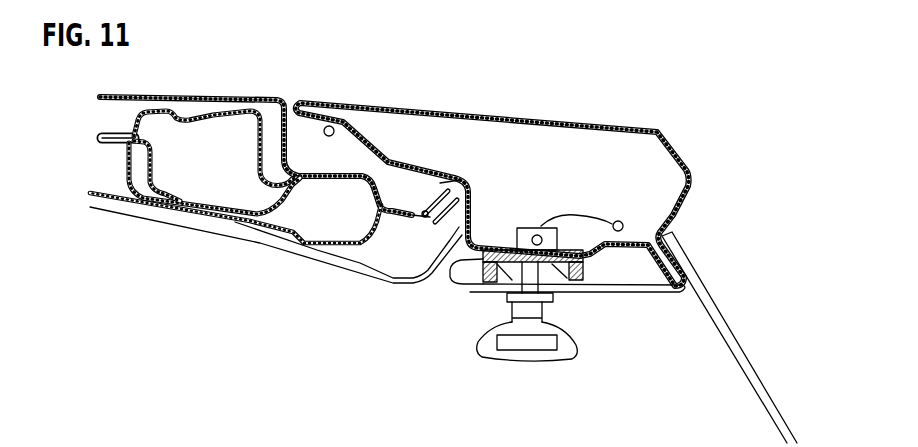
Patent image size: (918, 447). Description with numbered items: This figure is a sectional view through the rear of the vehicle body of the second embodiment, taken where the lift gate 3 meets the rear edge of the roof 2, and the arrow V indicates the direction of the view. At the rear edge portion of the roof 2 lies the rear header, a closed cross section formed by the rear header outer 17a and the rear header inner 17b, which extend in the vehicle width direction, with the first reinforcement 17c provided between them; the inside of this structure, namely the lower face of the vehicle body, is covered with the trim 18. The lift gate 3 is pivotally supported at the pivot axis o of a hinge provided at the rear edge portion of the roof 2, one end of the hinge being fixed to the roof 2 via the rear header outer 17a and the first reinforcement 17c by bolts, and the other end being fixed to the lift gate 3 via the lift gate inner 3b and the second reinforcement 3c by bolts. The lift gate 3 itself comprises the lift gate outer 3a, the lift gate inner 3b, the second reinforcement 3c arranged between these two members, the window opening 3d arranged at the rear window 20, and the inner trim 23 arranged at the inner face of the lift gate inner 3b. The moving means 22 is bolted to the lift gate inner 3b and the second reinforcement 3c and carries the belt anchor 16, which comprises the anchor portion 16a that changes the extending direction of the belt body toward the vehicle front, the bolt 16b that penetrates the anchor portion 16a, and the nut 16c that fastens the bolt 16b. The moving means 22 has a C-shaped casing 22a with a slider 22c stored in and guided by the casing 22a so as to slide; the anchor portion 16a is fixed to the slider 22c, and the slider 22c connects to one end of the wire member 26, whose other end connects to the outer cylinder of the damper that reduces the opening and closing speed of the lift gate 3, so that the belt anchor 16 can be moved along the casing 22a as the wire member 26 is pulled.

The roof 2 is at (134, 97).
The lift gate 3 is at (699, 160).
The lift gate outer 3a is at (473, 117).
The lift gate inner 3b is at (638, 247).
The second reinforcement 3c is at (641, 238).
The window opening 3d is at (683, 281).
The belt anchor 16 is at (519, 340).
The anchor portion 16a is at (563, 362).
The bolt 16b is at (552, 305).
The nut 16c is at (544, 278).
The rear header outer 17a is at (134, 118).
The rear header inner 17b is at (127, 168).
The first reinforcement 17c is at (151, 175).
The trim 18 is at (167, 224).
The rear window 20 is at (723, 314).
The moving means 22 is at (487, 256).
The casing 22a is at (455, 280).
The slider 22c is at (516, 280).
The inner trim 23 is at (628, 292).
The wire member 26 is at (572, 217).
The pivot axis o is at (329, 126).
The view direction V is at (194, 79).